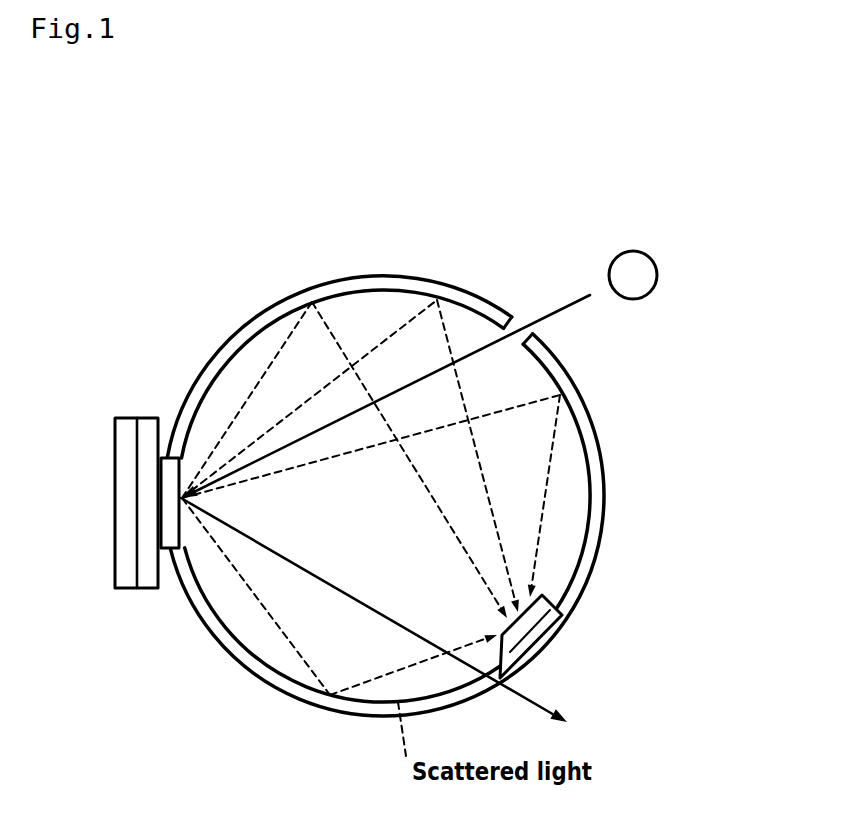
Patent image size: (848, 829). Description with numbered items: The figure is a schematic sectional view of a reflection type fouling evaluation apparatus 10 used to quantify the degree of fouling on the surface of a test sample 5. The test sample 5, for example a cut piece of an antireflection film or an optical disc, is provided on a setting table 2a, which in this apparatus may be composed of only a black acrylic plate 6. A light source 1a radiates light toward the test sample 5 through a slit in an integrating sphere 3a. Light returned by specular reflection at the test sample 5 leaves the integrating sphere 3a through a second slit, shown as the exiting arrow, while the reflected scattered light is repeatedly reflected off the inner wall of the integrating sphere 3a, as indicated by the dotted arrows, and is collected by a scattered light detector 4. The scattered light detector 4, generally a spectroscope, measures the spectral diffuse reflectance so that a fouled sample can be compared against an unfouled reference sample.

The fouling evaluation apparatus 10 is at (433, 398).
The light source 1a is at (647, 277).
The setting table 2a is at (105, 537).
The integrating sphere 3a is at (605, 473).
The scattered light detector 4 is at (535, 620).
The test sample 5 is at (168, 457).
The acrylic plate 6 is at (128, 528).